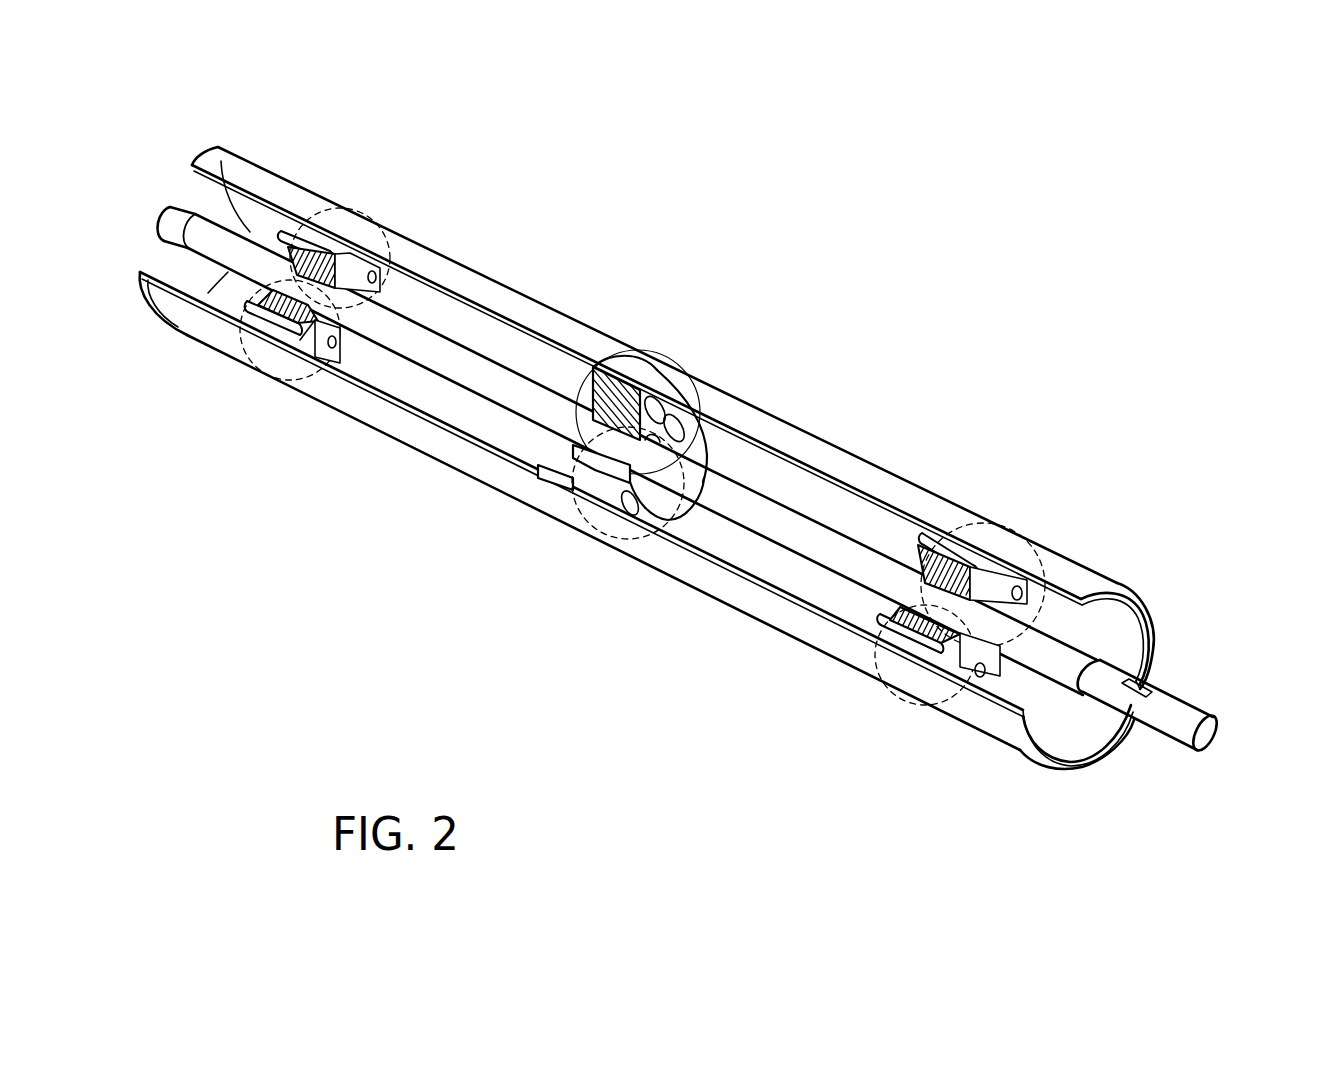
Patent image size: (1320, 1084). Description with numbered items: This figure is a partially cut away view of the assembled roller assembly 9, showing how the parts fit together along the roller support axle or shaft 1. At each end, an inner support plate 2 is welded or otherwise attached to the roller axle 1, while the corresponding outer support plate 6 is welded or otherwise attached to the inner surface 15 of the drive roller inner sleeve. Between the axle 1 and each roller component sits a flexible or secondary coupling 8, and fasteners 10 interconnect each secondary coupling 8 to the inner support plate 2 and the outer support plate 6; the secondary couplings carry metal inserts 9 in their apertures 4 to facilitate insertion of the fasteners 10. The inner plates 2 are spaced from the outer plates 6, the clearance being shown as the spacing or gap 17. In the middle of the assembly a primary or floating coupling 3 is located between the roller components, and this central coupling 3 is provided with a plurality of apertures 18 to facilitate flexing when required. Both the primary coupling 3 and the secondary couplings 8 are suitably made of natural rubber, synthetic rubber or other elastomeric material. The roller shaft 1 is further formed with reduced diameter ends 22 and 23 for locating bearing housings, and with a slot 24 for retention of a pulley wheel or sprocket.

The roller support axle 1 is at (150, 215).
The inner support plate 2 is at (360, 270).
The primary or floating coupling 3 is at (603, 528).
The apertures of secondary coupling 4 is at (713, 368).
The outer support plate 6 is at (348, 273).
The flexible or secondary coupling 8 is at (965, 662).
The roller assembly 9 is at (827, 230).
The fasteners 10 is at (310, 242).
The inner surface of drive roller inner sleeve 15 is at (483, 322).
The spacing or gap 17 is at (336, 346).
The apertures of central coupling 18 is at (712, 438).
The reduced diameter end 22 is at (173, 225).
The reduced diameter end 23 is at (1185, 714).
The slot 24 is at (1150, 690).